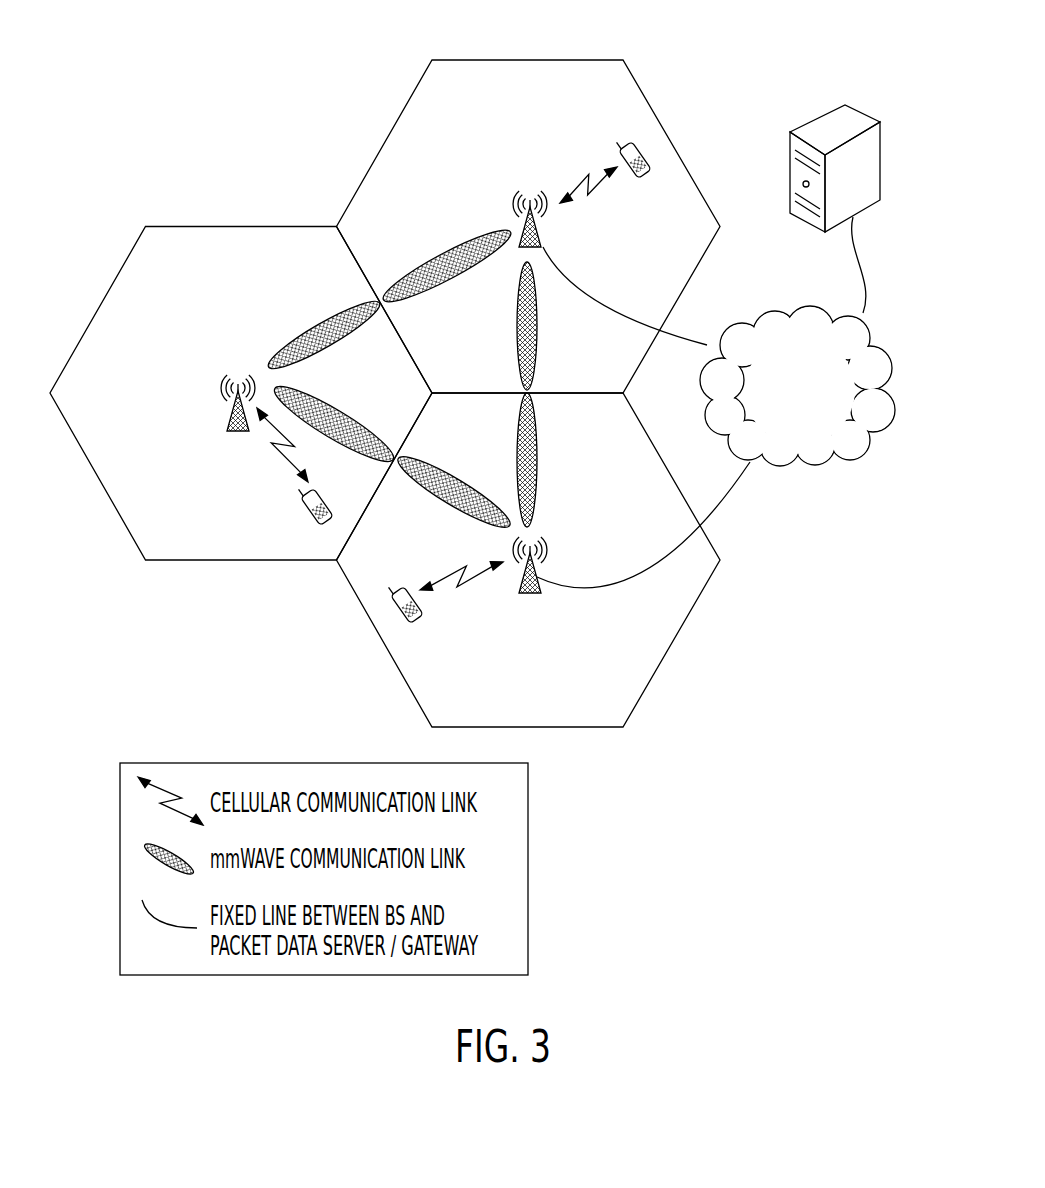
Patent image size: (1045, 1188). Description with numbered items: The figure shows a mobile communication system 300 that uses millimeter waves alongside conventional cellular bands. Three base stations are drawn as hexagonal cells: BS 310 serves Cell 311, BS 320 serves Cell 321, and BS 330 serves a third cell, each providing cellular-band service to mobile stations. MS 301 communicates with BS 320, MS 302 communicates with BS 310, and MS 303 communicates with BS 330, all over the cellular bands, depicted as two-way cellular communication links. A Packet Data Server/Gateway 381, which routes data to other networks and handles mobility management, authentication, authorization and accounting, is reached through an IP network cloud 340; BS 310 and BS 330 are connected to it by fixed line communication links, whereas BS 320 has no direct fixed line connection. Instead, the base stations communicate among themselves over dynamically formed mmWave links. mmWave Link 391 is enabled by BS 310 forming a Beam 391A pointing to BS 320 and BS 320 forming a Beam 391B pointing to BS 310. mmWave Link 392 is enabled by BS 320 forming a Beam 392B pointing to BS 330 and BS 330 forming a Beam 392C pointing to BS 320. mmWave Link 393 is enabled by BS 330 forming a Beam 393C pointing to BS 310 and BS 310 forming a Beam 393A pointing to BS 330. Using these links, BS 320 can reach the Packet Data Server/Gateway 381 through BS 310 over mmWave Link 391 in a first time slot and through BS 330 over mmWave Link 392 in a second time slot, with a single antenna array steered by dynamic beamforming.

The mobile communication system 300 is at (288, 81).
The cell 311 is at (532, 59).
The cell 321 is at (240, 226).
The base station 310 is at (508, 205).
The base station 320 is at (215, 388).
The base station 330 is at (556, 553).
The mobile station 301 is at (301, 498).
The mobile station 302 is at (618, 150).
The mobile station 303 is at (392, 612).
The network / packet data server gateway cloud 340 is at (809, 397).
The packet data server/gateway 381 is at (818, 122).
The mmWave link 391 is at (369, 299).
The beam 391A is at (448, 274).
The beam 391B is at (293, 342).
The mmWave link 392 is at (348, 443).
The beam 392B is at (273, 388).
The beam 392C is at (442, 497).
The mmWave link 393 is at (582, 398).
The beam 393A is at (523, 372).
The beam 393C is at (585, 463).